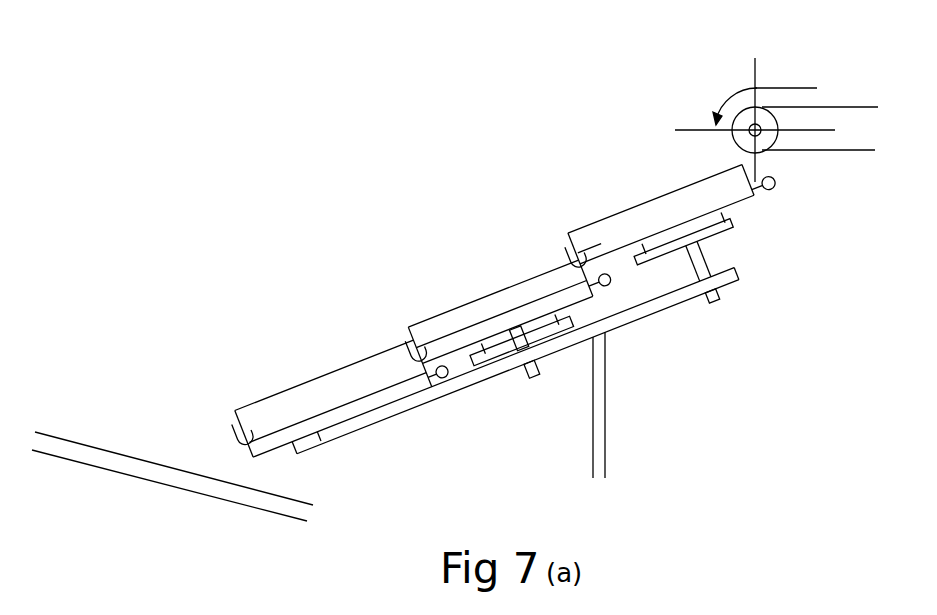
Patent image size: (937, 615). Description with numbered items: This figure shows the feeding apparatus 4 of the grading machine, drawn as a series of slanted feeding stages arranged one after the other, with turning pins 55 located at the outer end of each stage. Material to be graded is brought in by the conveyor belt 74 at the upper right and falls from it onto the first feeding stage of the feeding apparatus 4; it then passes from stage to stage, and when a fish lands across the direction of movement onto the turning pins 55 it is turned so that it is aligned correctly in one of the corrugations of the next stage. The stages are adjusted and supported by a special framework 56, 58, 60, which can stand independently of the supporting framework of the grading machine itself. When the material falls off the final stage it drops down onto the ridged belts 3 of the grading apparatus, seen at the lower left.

The ridged belts 3 is at (233, 493).
The feeding apparatus 4 is at (465, 229).
The turning pins 55 is at (229, 432).
The framework 56 is at (736, 278).
The framework 58 is at (601, 407).
The framework 60 is at (712, 303).
The conveyor belt 74 is at (823, 107).